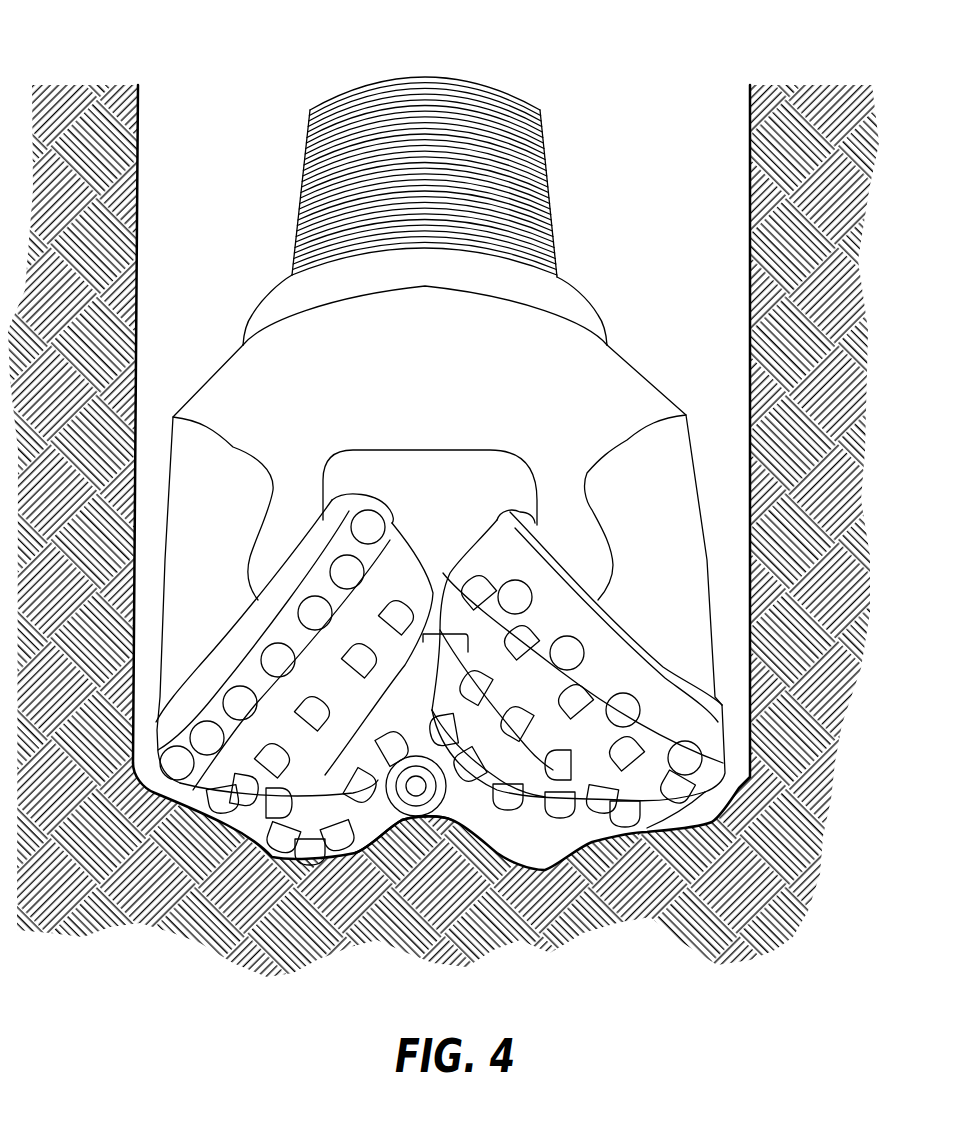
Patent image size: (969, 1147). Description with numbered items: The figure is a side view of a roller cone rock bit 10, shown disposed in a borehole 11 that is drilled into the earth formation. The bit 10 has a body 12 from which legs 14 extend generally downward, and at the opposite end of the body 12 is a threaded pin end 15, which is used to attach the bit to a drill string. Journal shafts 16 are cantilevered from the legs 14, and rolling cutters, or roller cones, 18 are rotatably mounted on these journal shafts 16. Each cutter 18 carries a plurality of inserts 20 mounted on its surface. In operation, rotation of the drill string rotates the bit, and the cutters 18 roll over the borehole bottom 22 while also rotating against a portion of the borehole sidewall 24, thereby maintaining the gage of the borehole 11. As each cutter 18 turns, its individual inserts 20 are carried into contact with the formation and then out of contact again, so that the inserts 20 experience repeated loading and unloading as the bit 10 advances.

The roller cone rock bit 10 is at (237, 49).
The borehole 11 is at (747, 333).
The body 12 is at (268, 306).
The legs 14 is at (231, 463).
The threaded pin end 15 is at (528, 152).
The journal shafts 16 is at (260, 623).
The rolling cutters 18 is at (400, 686).
The inserts 20 is at (360, 778).
The borehole bottom 22 is at (397, 820).
The borehole sidewall 24 is at (140, 658).